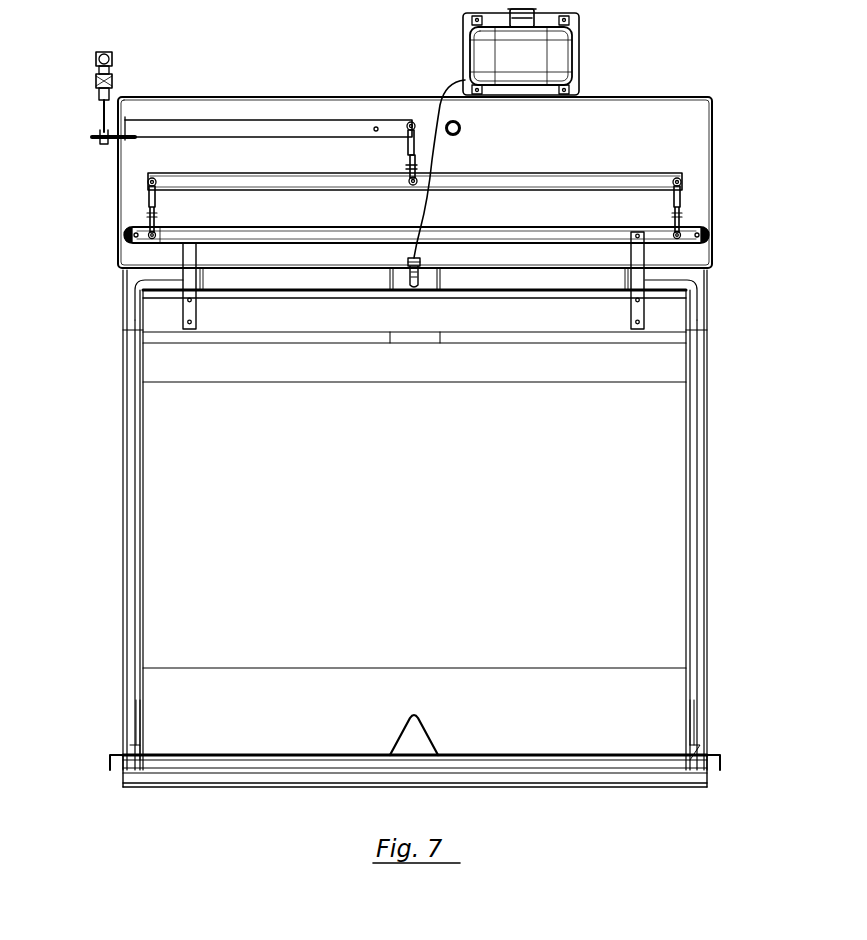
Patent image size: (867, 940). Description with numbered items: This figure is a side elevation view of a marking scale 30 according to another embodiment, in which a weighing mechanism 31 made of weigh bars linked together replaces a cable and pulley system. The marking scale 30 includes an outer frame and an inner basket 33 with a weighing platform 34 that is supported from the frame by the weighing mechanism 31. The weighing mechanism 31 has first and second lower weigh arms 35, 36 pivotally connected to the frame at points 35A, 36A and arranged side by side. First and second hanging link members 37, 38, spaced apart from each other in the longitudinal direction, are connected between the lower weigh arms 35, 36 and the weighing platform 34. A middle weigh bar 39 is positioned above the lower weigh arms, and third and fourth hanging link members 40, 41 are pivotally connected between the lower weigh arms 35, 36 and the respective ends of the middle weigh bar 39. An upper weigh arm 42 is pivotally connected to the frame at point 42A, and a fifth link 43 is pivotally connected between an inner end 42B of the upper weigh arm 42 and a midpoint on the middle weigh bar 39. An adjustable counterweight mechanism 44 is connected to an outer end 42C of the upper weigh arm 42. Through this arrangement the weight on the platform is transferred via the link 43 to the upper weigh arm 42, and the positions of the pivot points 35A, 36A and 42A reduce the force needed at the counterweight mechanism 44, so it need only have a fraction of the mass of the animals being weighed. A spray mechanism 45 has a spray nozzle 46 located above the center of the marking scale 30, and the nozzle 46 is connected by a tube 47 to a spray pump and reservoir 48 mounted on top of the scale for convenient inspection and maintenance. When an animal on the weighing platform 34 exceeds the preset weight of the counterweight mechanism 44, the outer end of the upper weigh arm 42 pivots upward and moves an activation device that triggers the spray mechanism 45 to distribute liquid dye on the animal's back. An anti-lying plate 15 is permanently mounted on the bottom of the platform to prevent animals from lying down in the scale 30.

The anti-lying plate 15 is at (392, 748).
The marking scale 30 is at (258, 82).
The weighing mechanism 31 is at (606, 137).
The inner basket 33 is at (158, 320).
The weighing platform 34 is at (170, 758).
The first lower weigh arm 35 is at (136, 239).
The pivot point of first lower weigh arm 35A is at (130, 230).
The second lower weigh arm 36 is at (670, 237).
The pivot point of second lower weigh arm 36A is at (700, 238).
The first hanging link member 37 is at (190, 274).
The second hanging link member 38 is at (640, 290).
The middle weigh bar 39 is at (513, 178).
The third hanging link member 40 is at (150, 197).
The fourth hanging link member 41 is at (680, 200).
The upper weigh arm 42 is at (290, 128).
The pivot point of upper weigh arm 42A is at (376, 128).
The inner end of upper weigh arm 42B is at (413, 123).
The outer end of upper weigh arm 42C is at (130, 130).
The fifth link 43 is at (407, 150).
The adjustable counterweight mechanism 44 is at (96, 90).
The spray mechanism 45 is at (465, 33).
The spray nozzle 46 is at (430, 240).
The tube 47 is at (415, 208).
The spray pump and reservoir 48 is at (578, 45).